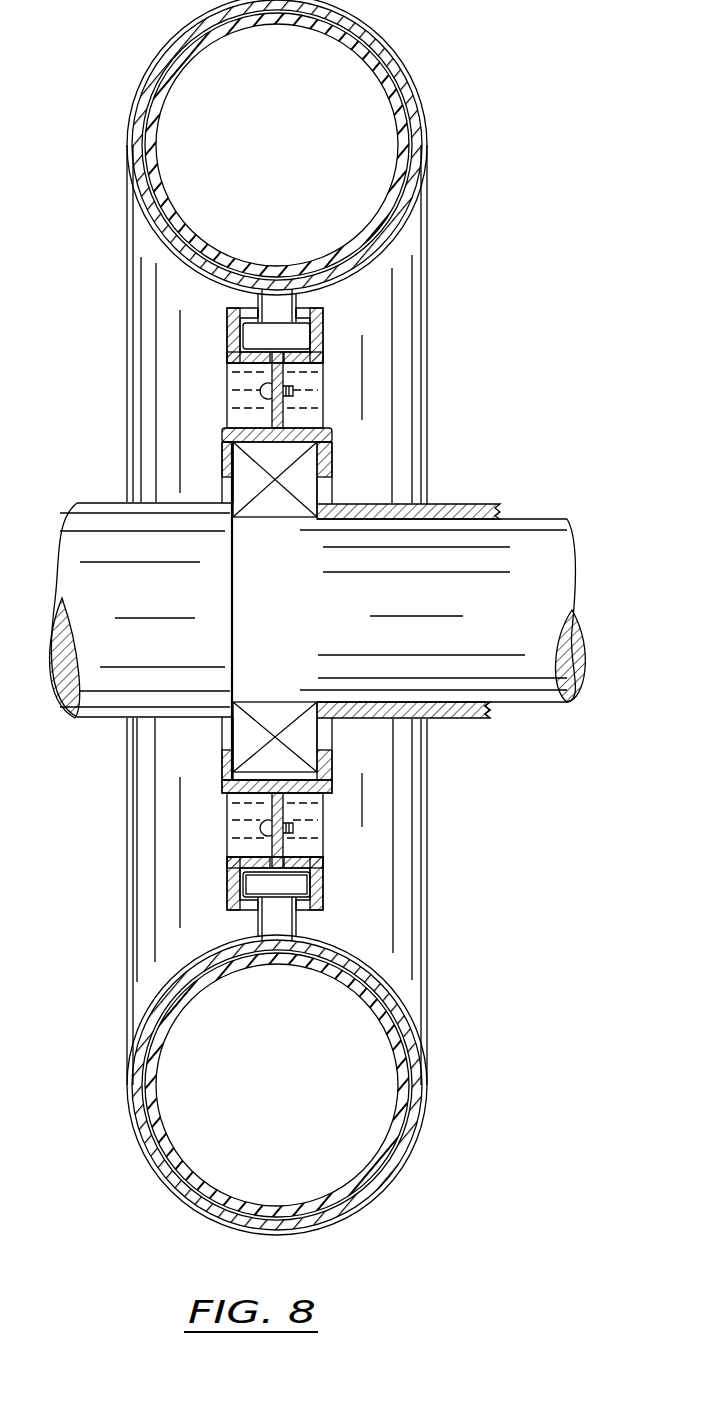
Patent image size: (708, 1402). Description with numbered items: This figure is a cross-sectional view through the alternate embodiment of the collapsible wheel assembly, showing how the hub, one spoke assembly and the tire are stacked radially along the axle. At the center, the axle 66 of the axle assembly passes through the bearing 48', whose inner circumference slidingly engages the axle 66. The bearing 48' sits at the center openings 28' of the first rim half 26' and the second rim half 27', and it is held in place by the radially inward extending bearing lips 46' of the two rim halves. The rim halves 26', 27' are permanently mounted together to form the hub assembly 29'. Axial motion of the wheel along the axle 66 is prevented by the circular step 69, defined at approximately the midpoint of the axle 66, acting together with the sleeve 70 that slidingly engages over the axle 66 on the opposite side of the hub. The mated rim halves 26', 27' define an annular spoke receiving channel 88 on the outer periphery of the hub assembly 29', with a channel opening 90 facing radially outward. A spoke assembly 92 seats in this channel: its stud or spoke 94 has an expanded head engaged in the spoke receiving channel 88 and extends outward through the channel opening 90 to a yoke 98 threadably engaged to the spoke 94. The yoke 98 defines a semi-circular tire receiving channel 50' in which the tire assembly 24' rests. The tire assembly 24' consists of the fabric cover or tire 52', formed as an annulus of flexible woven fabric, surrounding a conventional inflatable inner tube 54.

The tire assembly 24' is at (299, 617).
The cover or tire 52' is at (317, 615).
The inflatable inner tube 54 is at (398, 160).
The tire receiving channel 50' is at (300, 266).
The yoke 98 is at (373, 262).
The channel opening 90 is at (300, 302).
The spoke receiving channel 88 is at (325, 335).
The second rim half 27' is at (364, 390).
The first rim half 26' is at (194, 418).
The center opening 28' is at (268, 473).
The bearing lip 46' is at (315, 611).
The hub assembly 29' is at (196, 792).
The bearing 48' is at (267, 611).
The circular step 69 is at (232, 660).
The sleeve 70 is at (473, 720).
The axle 66 is at (578, 645).
The spoke 94 is at (292, 885).
The spoke assembly 92 is at (280, 912).